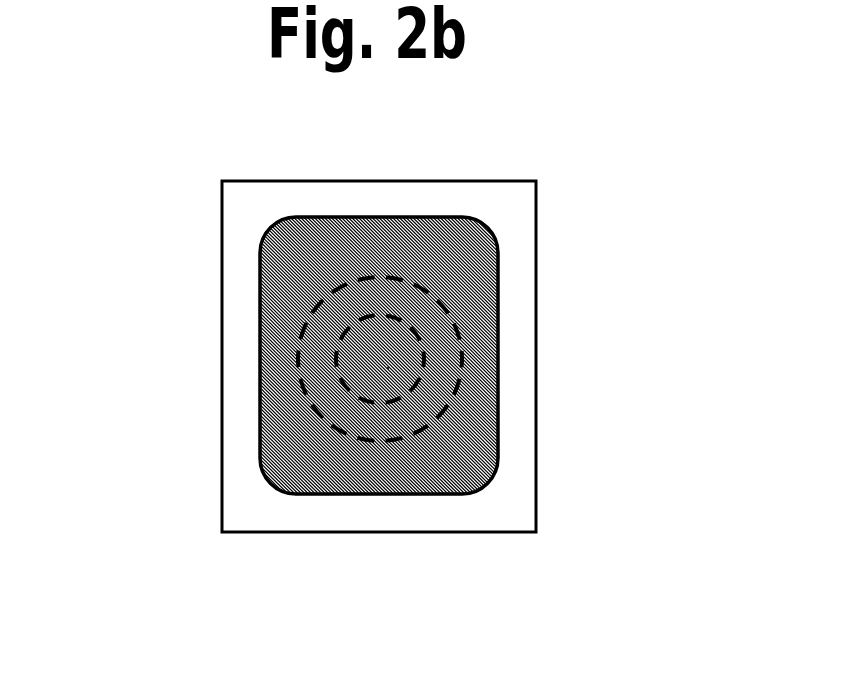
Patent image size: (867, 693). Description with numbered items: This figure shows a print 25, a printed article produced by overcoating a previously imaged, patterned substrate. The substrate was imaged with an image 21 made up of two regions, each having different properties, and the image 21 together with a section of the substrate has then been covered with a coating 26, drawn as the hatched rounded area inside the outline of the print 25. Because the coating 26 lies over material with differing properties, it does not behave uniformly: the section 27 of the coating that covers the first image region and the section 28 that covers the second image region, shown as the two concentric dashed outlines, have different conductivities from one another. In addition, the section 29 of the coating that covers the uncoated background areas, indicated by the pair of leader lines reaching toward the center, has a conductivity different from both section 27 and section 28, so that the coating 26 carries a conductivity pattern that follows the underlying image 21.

The image 21 is at (450, 321).
The print 25 is at (222, 282).
The coating 26 is at (285, 406).
The section of the coating 27 is at (322, 330).
The section of the coating 28 is at (423, 393).
The section of the coating 29 is at (387, 368).